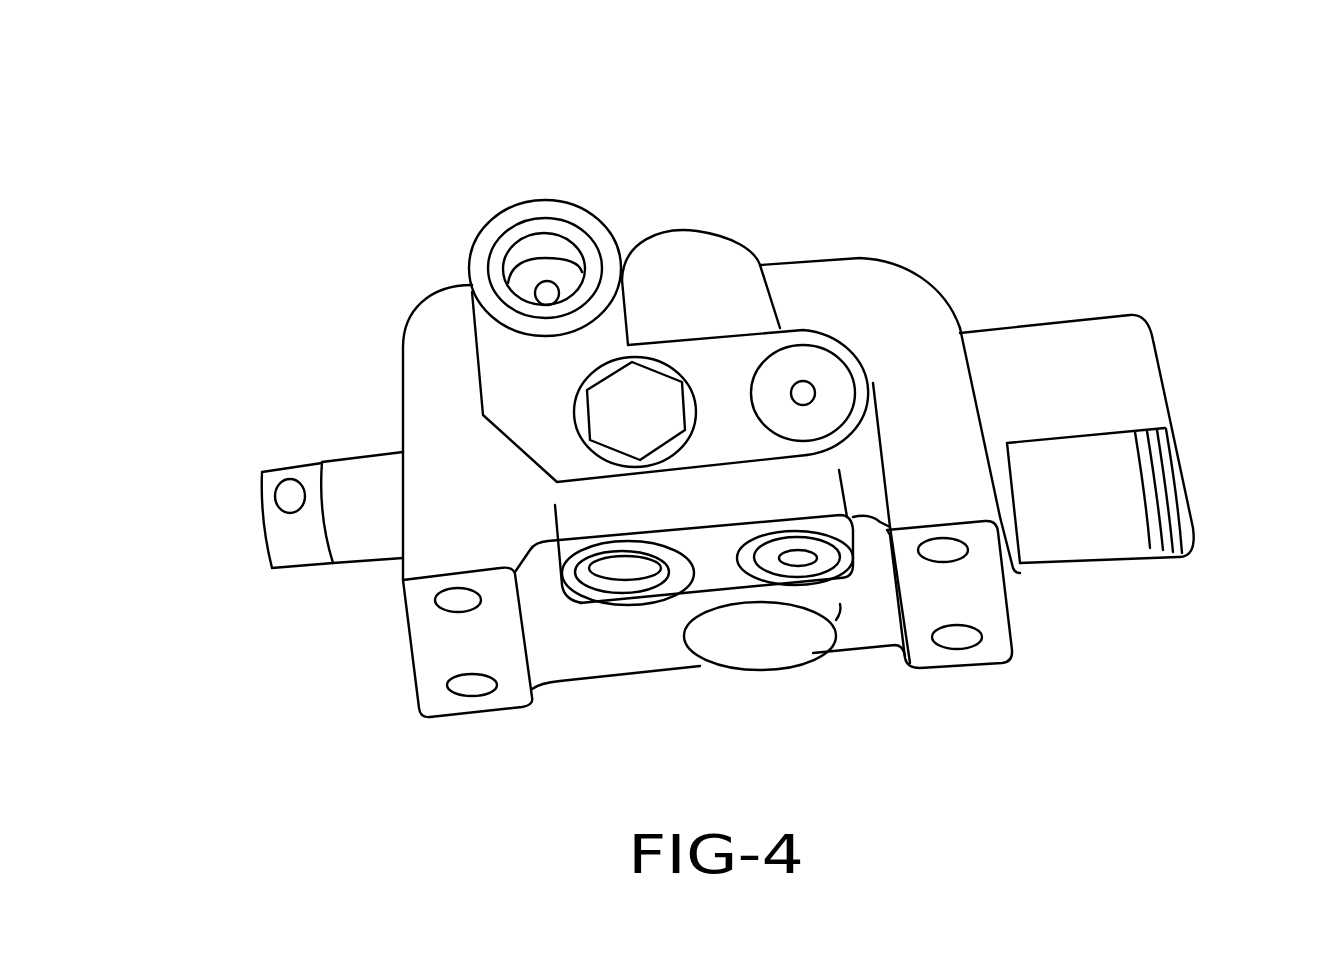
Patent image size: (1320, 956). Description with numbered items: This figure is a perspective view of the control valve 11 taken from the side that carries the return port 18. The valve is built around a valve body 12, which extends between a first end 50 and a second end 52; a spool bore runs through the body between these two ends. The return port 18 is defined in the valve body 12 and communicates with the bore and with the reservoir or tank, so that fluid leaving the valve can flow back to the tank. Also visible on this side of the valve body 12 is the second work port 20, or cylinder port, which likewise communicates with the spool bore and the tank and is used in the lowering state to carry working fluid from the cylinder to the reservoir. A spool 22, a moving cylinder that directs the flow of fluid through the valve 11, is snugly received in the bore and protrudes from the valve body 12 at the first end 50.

The control valve 11 is at (1202, 184).
The valve body 12 is at (823, 278).
The return port 18 is at (530, 248).
The second work port 20 is at (620, 568).
The spool 22 is at (278, 532).
The first end 50 is at (403, 425).
The second end 52 is at (1107, 330).